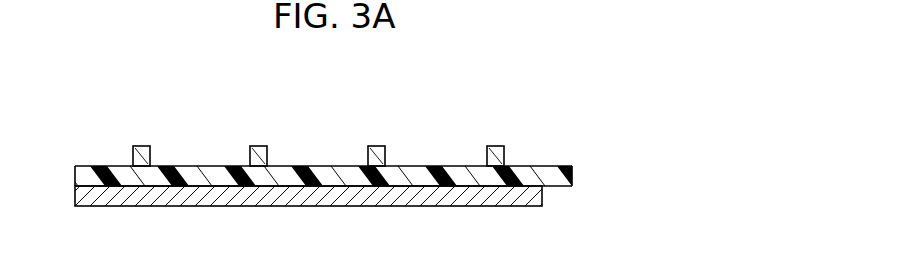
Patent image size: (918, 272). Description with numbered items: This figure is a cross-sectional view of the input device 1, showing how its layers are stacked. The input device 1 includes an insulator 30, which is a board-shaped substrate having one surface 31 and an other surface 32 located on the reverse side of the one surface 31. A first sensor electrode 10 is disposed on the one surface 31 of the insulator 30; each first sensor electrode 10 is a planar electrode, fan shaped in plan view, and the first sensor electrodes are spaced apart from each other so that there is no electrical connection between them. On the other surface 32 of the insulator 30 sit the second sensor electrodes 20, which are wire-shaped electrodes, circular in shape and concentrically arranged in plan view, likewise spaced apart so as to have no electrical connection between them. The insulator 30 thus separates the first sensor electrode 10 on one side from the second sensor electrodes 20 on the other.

The input device 1 is at (566, 102).
The first sensor electrode 10 is at (542, 203).
The second sensor electrode 20 is at (502, 147).
The insulator 30 is at (573, 175).
The one surface 31 is at (422, 187).
The other surface 32 is at (420, 166).